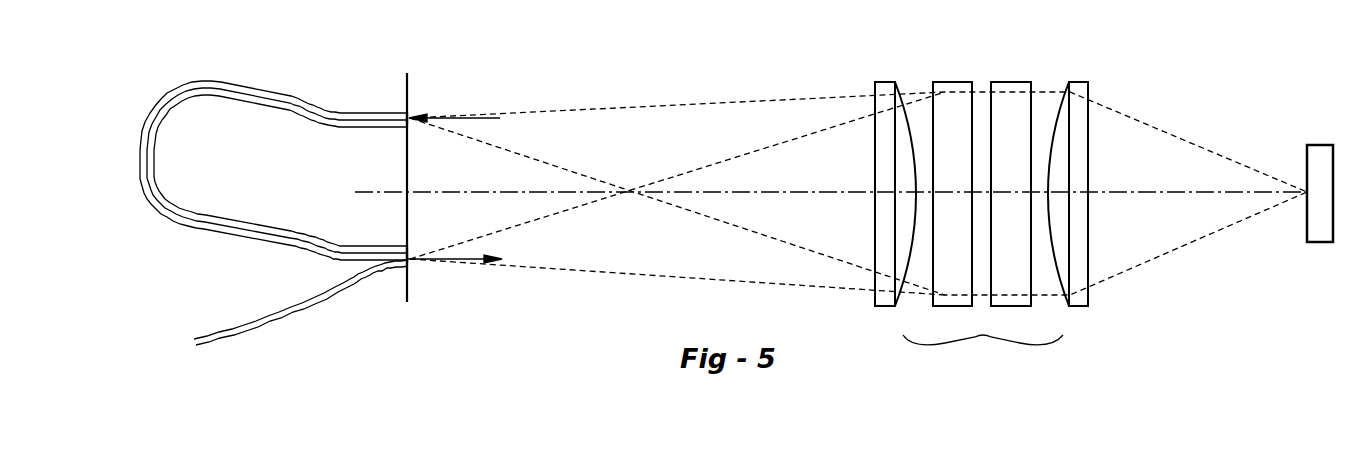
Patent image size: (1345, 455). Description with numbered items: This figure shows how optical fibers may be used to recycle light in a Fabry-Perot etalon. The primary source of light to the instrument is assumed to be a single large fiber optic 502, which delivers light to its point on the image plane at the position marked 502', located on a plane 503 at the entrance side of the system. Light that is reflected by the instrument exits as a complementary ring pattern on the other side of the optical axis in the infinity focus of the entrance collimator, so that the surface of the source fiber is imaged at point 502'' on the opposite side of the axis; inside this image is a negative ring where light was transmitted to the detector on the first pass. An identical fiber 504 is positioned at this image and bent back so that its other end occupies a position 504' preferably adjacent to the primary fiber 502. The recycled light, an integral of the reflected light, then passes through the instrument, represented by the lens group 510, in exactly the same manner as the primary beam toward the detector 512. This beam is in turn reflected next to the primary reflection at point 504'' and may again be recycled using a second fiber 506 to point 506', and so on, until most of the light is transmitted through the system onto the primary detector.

The fiber optic 502 is at (301, 302).
The optical fiber output end 502' is at (454, 286).
The image point of source fiber 502'' is at (455, 82).
The fiber mounting plane 503 is at (405, 80).
The identical fiber 504 is at (264, 148).
The position of fiber end 504' is at (444, 240).
The reflection point of recycled beam 504'' is at (450, 142).
The second fiber 506 is at (280, 170).
The point of second fiber 506' is at (441, 226).
The lens assembly 510 is at (823, 168).
The detector 512 is at (1320, 158).